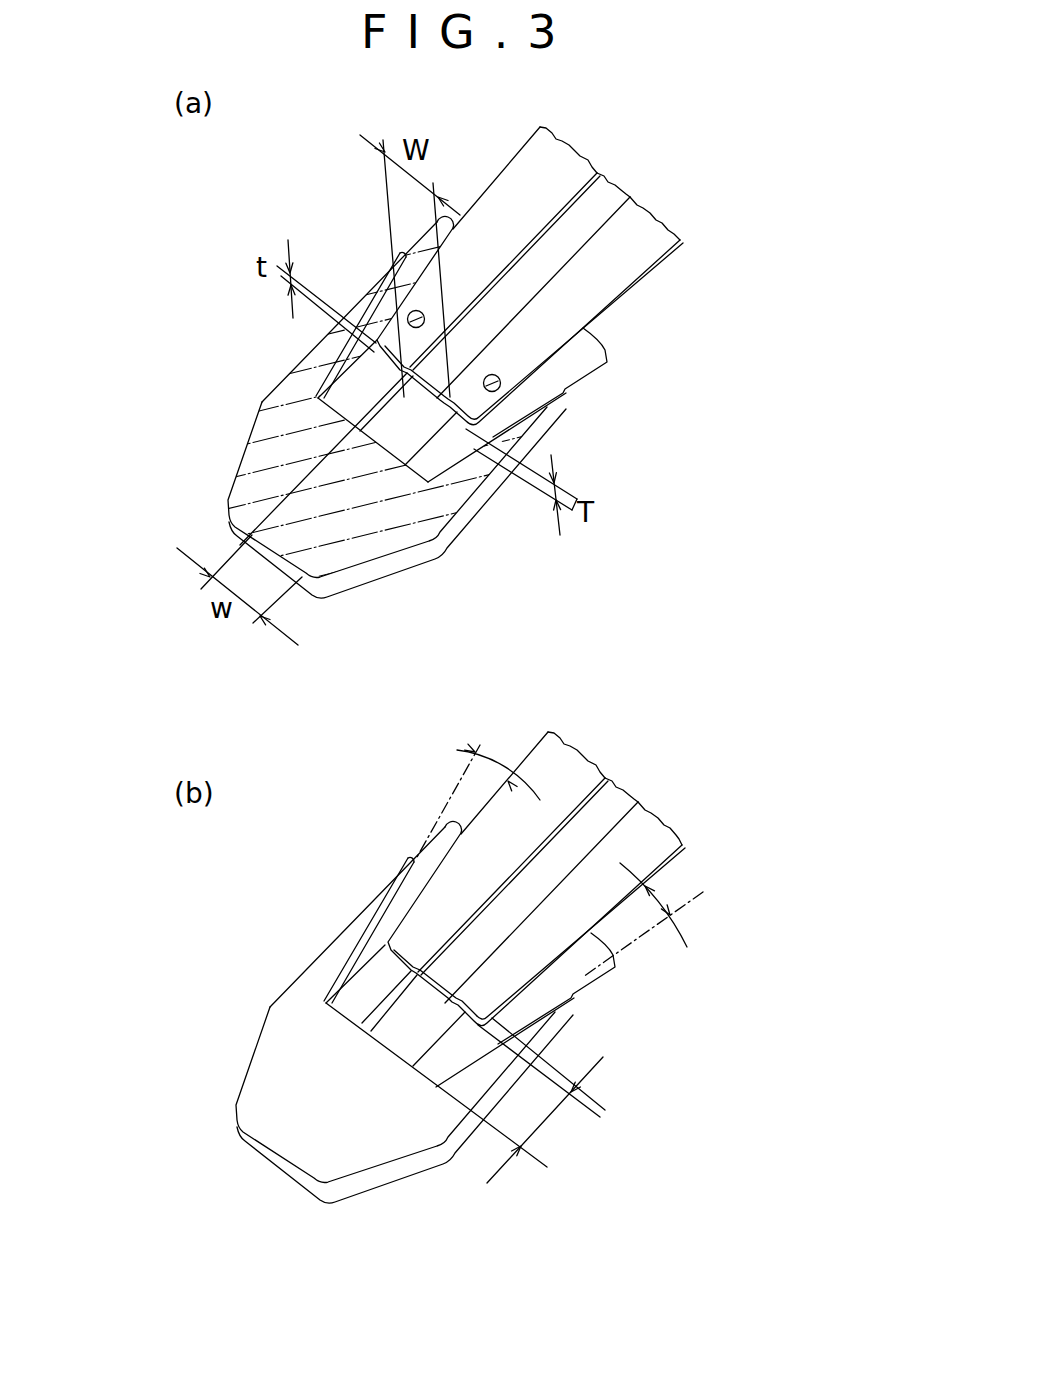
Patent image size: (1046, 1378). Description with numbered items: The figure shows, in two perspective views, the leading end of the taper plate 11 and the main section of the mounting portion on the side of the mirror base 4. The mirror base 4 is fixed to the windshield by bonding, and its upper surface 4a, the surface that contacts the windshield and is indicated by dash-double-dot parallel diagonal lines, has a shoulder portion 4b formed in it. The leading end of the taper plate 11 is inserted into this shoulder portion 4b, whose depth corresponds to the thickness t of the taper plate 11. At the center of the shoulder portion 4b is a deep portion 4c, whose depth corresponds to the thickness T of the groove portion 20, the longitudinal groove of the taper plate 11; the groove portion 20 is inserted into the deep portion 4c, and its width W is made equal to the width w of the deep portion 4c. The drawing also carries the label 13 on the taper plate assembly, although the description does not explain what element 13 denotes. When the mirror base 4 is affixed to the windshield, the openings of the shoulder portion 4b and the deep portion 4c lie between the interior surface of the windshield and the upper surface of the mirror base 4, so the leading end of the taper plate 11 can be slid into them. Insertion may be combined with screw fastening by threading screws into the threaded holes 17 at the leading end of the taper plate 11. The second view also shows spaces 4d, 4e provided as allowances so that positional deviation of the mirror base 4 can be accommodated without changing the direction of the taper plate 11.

The mirror base 4 is at (215, 443).
The upper surface 4a is at (252, 492).
The shoulder portion 4b is at (445, 462).
The deep portion 4c is at (402, 403).
The space 4d is at (458, 751).
The space 4e is at (545, 1120).
The taper plate 11 is at (672, 205).
The plate 13 is at (572, 313).
The threaded holes 17 is at (500, 384).
The groove portion 20 is at (600, 197).